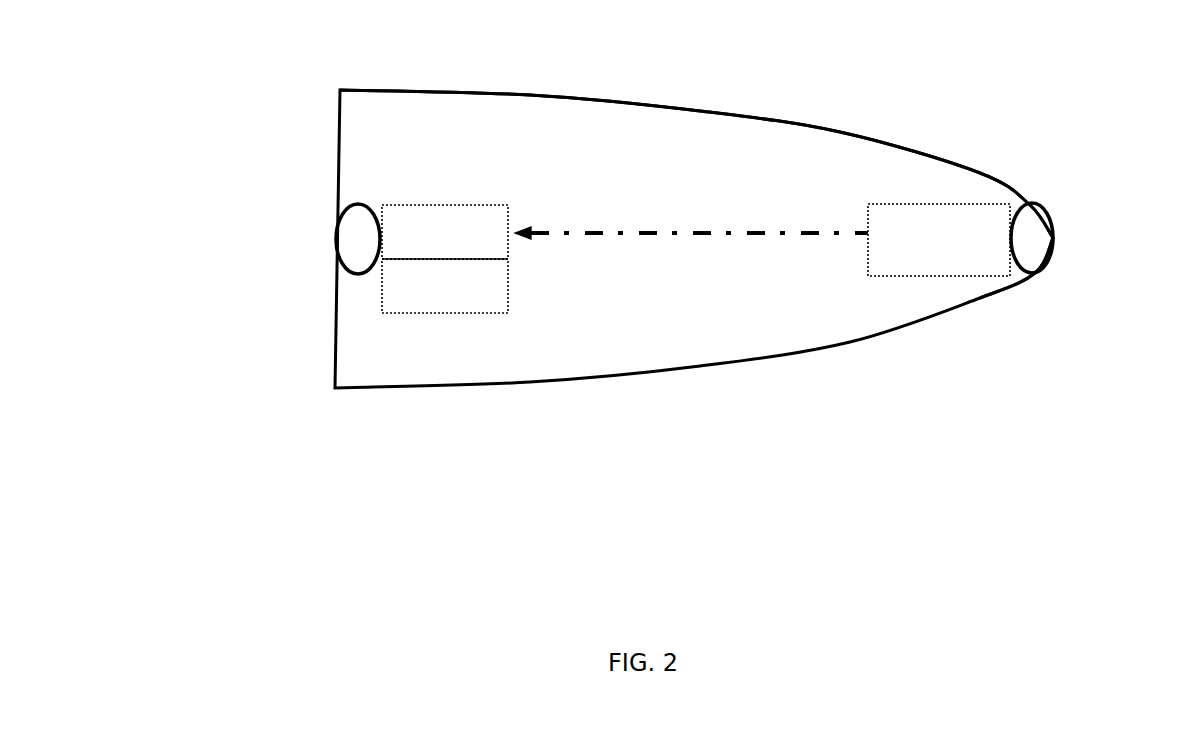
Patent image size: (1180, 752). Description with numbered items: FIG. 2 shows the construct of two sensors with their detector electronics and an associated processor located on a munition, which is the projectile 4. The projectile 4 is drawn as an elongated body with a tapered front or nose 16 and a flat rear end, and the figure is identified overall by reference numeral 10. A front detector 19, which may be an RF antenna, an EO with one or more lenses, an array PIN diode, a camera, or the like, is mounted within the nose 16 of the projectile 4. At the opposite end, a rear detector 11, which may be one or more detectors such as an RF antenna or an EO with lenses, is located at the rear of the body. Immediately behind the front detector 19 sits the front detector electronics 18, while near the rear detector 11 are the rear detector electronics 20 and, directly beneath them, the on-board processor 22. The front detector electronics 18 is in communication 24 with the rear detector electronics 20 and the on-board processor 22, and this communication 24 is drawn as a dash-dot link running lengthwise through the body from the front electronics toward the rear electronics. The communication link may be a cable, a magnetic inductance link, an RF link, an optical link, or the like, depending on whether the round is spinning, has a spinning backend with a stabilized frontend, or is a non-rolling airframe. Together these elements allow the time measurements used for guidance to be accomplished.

The projectile 4 is at (461, 82).
The sensor housing 10 is at (272, 332).
The rear detector 11 is at (325, 224).
The nose 16 is at (1065, 159).
The front detector electronics 18 is at (939, 240).
The front detector 19 is at (1062, 221).
The rear detector electronics 20 is at (445, 232).
The on-board processor 22 is at (445, 286).
The communication 24 is at (651, 252).